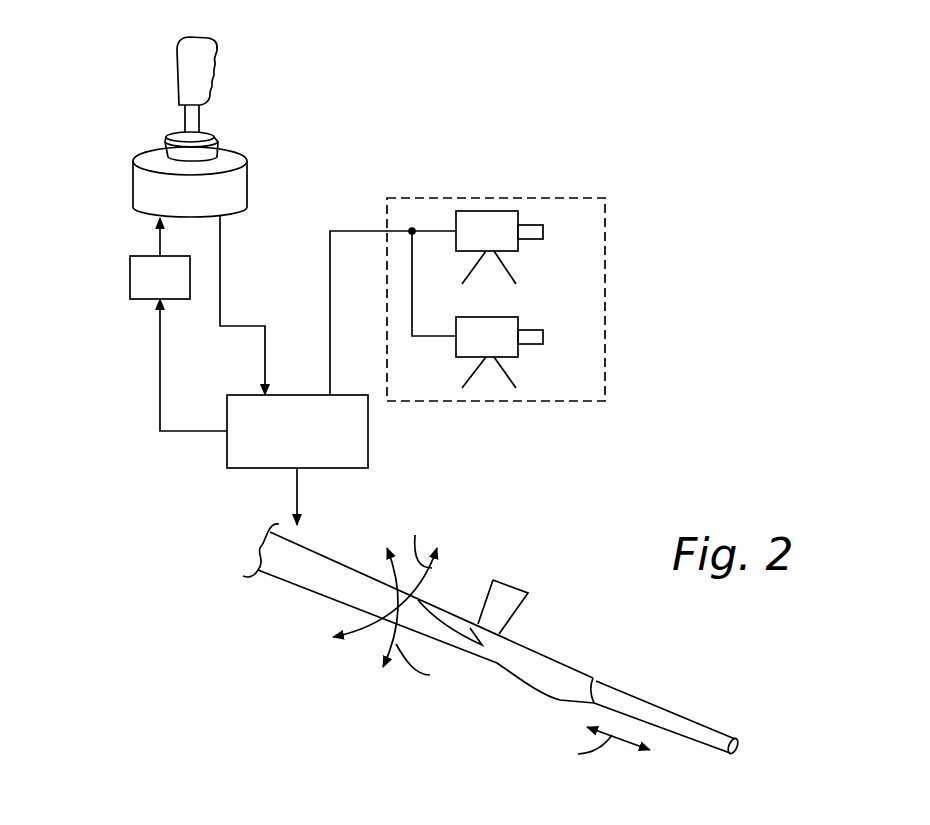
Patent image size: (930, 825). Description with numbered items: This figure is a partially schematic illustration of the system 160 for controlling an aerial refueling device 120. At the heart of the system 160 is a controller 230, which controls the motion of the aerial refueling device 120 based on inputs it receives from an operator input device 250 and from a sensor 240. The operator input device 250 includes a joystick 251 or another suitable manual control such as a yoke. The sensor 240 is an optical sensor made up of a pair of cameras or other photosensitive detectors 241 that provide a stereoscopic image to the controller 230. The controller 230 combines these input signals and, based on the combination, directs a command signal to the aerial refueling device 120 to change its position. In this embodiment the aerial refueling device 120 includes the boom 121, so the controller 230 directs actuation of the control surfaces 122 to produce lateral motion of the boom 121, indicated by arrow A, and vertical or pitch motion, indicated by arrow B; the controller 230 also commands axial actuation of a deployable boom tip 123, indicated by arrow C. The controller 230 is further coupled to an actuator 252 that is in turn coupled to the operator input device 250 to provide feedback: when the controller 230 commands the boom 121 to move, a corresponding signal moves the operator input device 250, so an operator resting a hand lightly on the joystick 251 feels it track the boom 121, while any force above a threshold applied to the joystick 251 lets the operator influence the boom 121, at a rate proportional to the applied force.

The aerial refueling device 120 is at (496, 637).
The boom 121 is at (304, 592).
The control surfaces 122 is at (507, 582).
The deployable boom tip 123 is at (694, 718).
The system 160 is at (673, 288).
The controller 230 is at (368, 428).
The sensor 240 is at (498, 186).
The cameras 241 is at (518, 249).
The operator input device 250 is at (245, 156).
The joystick 251 is at (217, 40).
The actuator 252 is at (130, 275).